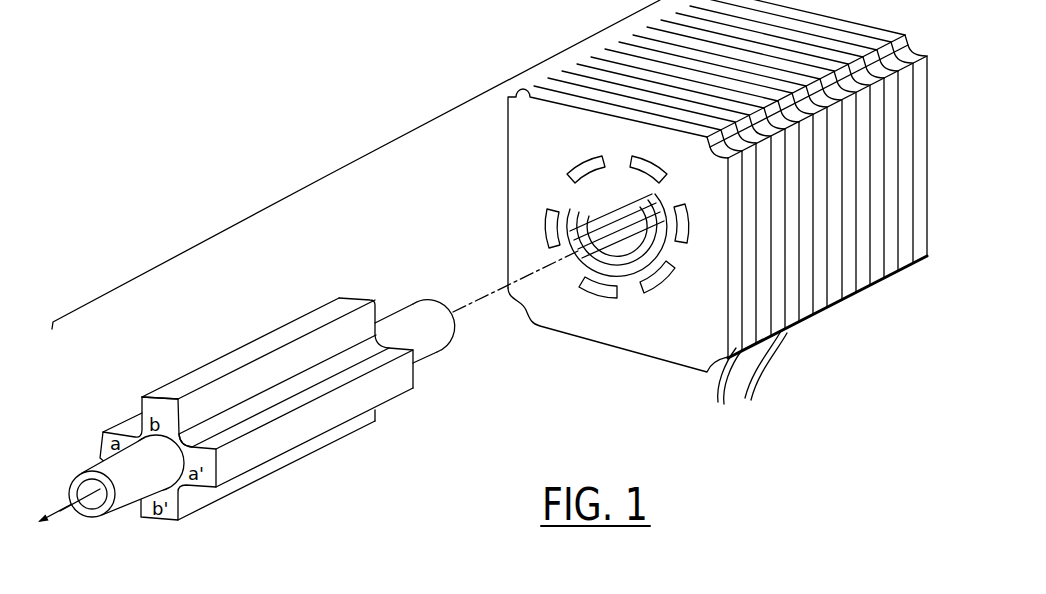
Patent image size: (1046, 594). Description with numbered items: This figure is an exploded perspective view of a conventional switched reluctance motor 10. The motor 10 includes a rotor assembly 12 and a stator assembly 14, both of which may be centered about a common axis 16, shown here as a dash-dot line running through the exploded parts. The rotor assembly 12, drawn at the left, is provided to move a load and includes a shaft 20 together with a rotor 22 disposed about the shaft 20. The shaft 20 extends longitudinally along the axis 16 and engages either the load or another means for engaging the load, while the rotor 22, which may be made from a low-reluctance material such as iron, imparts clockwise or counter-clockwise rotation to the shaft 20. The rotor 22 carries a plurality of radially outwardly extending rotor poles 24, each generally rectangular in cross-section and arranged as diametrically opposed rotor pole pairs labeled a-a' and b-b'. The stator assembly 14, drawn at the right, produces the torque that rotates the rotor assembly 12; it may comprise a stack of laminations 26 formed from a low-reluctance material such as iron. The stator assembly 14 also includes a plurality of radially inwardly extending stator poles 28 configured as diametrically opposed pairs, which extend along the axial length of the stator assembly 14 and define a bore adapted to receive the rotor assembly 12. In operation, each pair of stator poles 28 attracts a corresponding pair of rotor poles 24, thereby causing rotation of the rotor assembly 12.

The switched reluctance motor 10 is at (364, 158).
The rotor assembly 12 is at (332, 456).
The stator assembly 14 is at (832, 357).
The axis 16 is at (80, 512).
The shaft 20 is at (448, 333).
The rotor 22 is at (186, 443).
The rotor poles 24 is at (140, 405).
The laminations 26 is at (752, 378).
The stator poles 28 is at (560, 183).